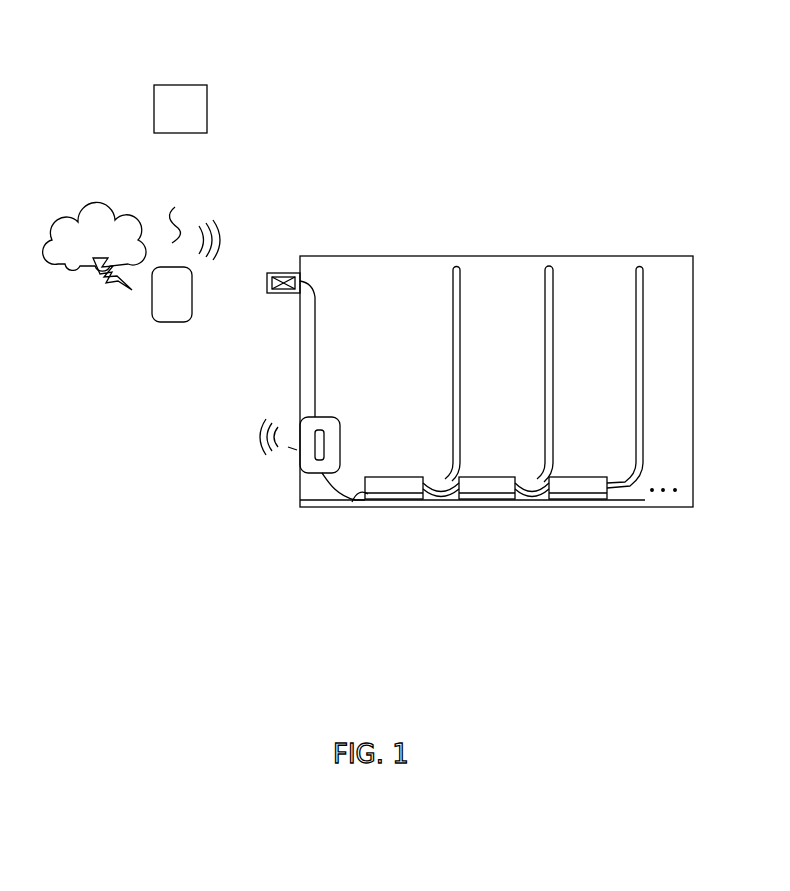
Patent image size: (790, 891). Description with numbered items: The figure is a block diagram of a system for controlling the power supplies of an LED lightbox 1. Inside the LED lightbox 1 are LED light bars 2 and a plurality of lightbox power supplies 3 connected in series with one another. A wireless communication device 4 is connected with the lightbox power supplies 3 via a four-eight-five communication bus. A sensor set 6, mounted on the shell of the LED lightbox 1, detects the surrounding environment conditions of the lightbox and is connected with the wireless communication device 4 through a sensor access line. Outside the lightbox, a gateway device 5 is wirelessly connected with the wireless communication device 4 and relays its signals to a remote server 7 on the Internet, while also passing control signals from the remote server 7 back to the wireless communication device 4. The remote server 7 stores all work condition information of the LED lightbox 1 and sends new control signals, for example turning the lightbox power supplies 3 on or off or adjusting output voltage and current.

The LED lightbox 1 is at (403, 256).
The LED light bar 2 is at (551, 320).
The lightbox power supply 3 is at (489, 485).
The wireless communication device 4 is at (322, 460).
The gateway device 5 is at (178, 300).
The sensor set 6 is at (284, 273).
The remote server 7 is at (172, 105).